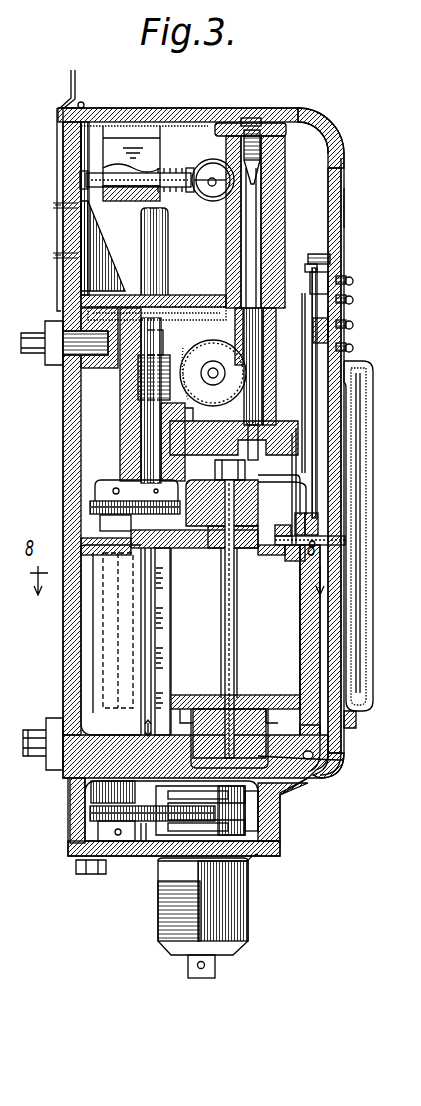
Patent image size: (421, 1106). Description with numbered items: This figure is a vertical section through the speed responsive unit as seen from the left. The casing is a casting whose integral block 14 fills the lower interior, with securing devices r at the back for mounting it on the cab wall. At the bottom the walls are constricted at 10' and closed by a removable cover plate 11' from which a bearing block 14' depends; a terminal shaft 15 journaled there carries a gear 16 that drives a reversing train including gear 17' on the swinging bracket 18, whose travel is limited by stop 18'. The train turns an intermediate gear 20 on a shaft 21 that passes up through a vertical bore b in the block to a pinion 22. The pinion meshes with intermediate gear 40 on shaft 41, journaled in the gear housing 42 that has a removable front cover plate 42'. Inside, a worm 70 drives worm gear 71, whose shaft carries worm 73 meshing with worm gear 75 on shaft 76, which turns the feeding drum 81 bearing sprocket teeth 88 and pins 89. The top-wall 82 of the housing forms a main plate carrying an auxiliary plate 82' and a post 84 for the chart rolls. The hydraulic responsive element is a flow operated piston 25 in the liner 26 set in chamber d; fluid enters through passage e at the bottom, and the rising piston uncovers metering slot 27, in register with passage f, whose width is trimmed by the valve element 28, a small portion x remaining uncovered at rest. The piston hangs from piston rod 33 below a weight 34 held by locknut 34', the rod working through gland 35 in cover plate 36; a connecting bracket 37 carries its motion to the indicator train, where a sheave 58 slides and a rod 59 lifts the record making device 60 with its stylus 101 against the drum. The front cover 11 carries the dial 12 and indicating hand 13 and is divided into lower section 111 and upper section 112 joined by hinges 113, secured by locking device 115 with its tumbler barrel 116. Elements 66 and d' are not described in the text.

The constricted walls 10' is at (321, 796).
The front cover 11 is at (223, 795).
The cover plate 11' is at (292, 850).
The dial 12 is at (337, 690).
The indicating hand 13 is at (350, 622).
The block 14 is at (284, 734).
The bearing block 14' is at (220, 906).
The terminal shaft 15 is at (200, 975).
The gear 16 is at (243, 860).
The gear 17' is at (182, 850).
The bracket 18 is at (231, 809).
The stop 18' is at (117, 859).
The intermediate gear 20 is at (82, 807).
The shaft 21 is at (110, 632).
The pinion 22 is at (82, 500).
The flow operated piston 25 is at (285, 700).
The liner 26 is at (300, 600).
The metering slot 27 is at (162, 650).
The valve element 28 is at (158, 630).
The piston rod 33 is at (228, 605).
The weight 34 is at (327, 483).
The locknut 34' is at (247, 462).
The gland 35 is at (232, 548).
The cover plate 36 is at (188, 540).
The connecting bracket 37 is at (290, 462).
The intermediate gear 40 is at (110, 476).
The shaft 41 is at (140, 430).
The housing 42 is at (102, 394).
The front cover plate 42' is at (345, 457).
The sheave 58 is at (300, 505).
The rod 59 is at (310, 406).
The record making device 60 is at (371, 267).
The valve pin 66 is at (310, 518).
The worm 70 is at (130, 370).
The worm gear 71 is at (182, 338).
The worm 73 is at (230, 385).
The worm gear 75 is at (290, 375).
The shaft 76 is at (270, 192).
The feeding drum 81 is at (273, 212).
The top-wall 82 is at (107, 246).
The auxiliary plate 82' is at (50, 208).
The post 84 is at (158, 262).
The sprocket teeth 88 is at (292, 115).
The pins 89 is at (215, 295).
The stylus 101 is at (300, 256).
The lower section 111 is at (321, 333).
The upper section 112 is at (337, 196).
The hinges 113 is at (345, 290).
The locking device 115 is at (165, 163).
The tumbler barrel 116 is at (200, 155).
The vertical bore b is at (95, 592).
The cylindrical chamber d is at (296, 815).
The valve chamber d' is at (345, 557).
The passage e is at (302, 762).
The connecting passage f is at (78, 665).
The securing devices r is at (38, 312).
The uncovered portion x is at (138, 716).